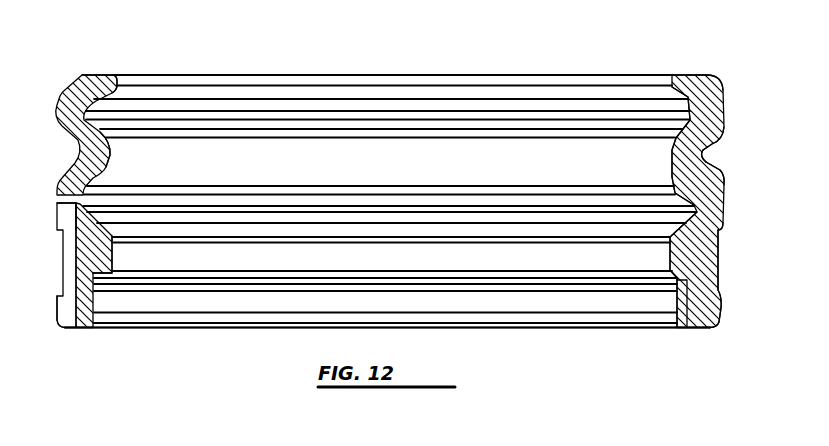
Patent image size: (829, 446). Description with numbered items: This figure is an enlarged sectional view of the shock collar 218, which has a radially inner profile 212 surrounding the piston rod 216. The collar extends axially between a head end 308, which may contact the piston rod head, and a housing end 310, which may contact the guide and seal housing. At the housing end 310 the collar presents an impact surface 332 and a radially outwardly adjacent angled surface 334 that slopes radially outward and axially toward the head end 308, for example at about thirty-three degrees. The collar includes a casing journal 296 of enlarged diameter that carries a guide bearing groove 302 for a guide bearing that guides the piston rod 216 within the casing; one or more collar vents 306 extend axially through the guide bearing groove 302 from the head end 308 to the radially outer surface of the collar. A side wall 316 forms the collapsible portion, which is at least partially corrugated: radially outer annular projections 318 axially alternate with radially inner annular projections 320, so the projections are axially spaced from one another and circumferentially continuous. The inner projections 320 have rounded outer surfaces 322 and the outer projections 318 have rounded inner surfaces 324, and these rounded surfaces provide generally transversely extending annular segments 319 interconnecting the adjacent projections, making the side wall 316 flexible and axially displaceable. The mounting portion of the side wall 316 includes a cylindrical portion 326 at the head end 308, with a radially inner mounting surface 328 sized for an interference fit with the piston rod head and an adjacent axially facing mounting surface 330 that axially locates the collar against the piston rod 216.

The housing end 310 is at (100, 63).
The radially inner annular projections 320 is at (111, 78).
The radially inner profile 212 is at (262, 120).
The radially outer annular projections 318 is at (58, 122).
The collar vents 306 is at (62, 212).
The guide bearing groove 302 is at (63, 256).
The radially inner mounting surface 328 is at (114, 256).
The cylindrical portion 326 is at (96, 278).
The shock collar 218 is at (46, 310).
The impact surface 332 is at (684, 75).
The angled surface 334 is at (707, 75).
The annular segments 319 is at (700, 133).
The rounded outer surfaces 322 is at (713, 161).
The side wall 316 is at (733, 172).
The rounded inner surfaces 324 is at (680, 116).
The casing journal 296 is at (724, 230).
The axially facing mounting surface 330 is at (672, 273).
The head end 308 is at (506, 348).
The piston rod 216 is at (212, 445).